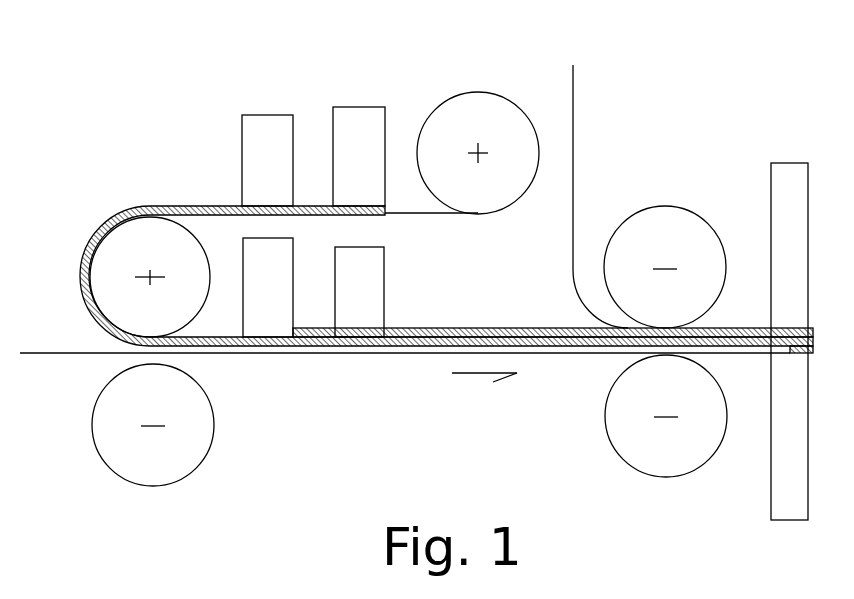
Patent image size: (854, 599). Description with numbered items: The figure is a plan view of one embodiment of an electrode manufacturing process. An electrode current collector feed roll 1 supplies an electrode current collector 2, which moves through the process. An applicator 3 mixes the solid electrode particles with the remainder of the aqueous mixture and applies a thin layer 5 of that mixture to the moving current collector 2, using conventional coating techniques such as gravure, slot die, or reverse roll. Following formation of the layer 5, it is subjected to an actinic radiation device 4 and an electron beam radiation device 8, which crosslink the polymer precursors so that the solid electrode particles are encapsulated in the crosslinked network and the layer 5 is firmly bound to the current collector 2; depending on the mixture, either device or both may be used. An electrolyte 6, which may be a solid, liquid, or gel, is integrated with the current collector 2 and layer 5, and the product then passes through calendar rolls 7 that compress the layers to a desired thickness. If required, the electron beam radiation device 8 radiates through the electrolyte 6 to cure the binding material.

The electrode current collector feed roll 1 is at (463, 90).
The electrode current collector 2 is at (405, 213).
The applicator 3 is at (363, 107).
The actinic radiation device 4 is at (267, 115).
The layer 5 is at (172, 207).
The electrolyte 6 is at (570, 147).
The calendar rolls 7 is at (657, 206).
The electron beam radiation device 8 is at (793, 163).